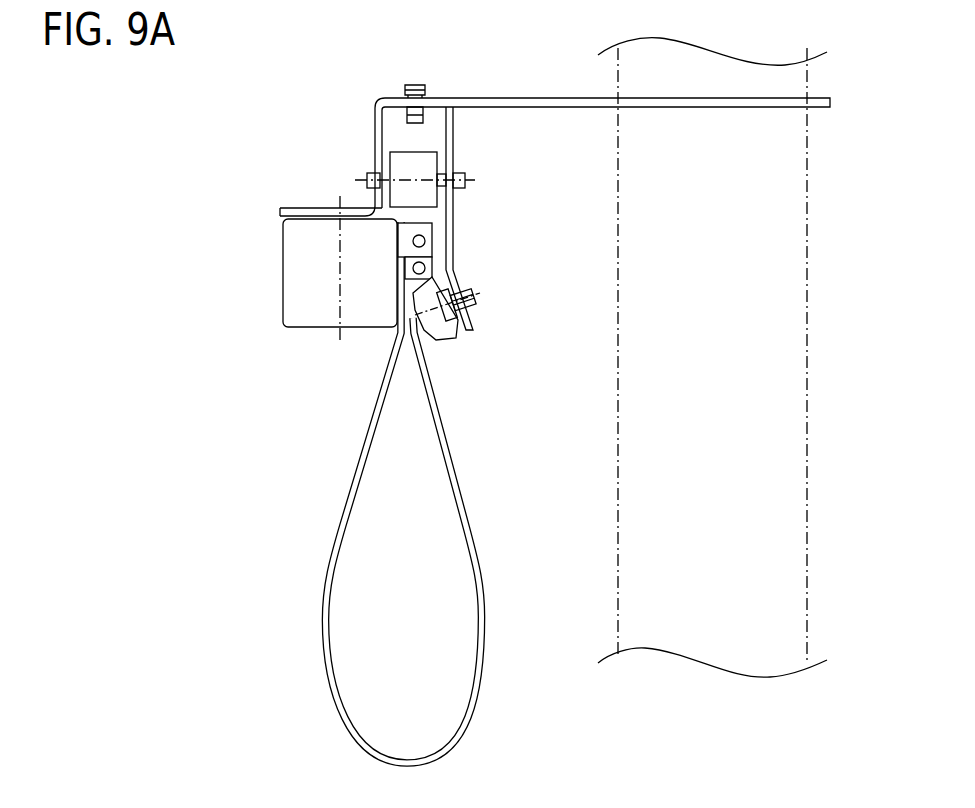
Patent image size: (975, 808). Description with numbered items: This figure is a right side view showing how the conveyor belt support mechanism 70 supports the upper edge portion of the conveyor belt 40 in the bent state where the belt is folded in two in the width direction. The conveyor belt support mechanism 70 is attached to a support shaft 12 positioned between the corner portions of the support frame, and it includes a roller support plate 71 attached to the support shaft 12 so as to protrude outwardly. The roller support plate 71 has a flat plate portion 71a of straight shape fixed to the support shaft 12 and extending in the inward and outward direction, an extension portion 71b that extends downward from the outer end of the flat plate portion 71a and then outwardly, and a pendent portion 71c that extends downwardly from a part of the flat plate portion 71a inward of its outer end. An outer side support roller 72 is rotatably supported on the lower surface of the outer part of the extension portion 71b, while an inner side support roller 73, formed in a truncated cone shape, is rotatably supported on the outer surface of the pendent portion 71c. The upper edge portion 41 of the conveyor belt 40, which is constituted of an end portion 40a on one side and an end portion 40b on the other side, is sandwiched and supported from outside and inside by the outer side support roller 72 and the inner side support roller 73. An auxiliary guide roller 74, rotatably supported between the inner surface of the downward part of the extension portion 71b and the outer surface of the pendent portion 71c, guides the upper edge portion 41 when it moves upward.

The support shaft 12 is at (810, 338).
The conveyor belt 40 is at (325, 645).
The end portion on one side 40a is at (425, 241).
The end portion on the other side 40b is at (425, 268).
The upper edge portion 41 is at (500, 250).
The conveyor belt support mechanism 70 is at (283, 93).
The roller support plate 71 is at (517, 184).
The flat plate portion 71a is at (550, 98).
The extension portion 71b is at (312, 209).
The pendent portion 71c is at (455, 197).
The outer side support roller 72 is at (297, 277).
The inner side support roller 73 is at (442, 332).
The auxiliary guide roller 74 is at (400, 160).